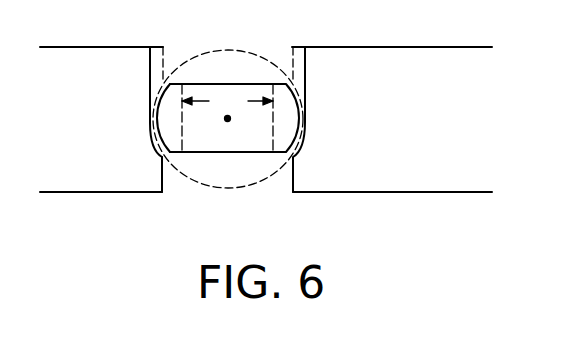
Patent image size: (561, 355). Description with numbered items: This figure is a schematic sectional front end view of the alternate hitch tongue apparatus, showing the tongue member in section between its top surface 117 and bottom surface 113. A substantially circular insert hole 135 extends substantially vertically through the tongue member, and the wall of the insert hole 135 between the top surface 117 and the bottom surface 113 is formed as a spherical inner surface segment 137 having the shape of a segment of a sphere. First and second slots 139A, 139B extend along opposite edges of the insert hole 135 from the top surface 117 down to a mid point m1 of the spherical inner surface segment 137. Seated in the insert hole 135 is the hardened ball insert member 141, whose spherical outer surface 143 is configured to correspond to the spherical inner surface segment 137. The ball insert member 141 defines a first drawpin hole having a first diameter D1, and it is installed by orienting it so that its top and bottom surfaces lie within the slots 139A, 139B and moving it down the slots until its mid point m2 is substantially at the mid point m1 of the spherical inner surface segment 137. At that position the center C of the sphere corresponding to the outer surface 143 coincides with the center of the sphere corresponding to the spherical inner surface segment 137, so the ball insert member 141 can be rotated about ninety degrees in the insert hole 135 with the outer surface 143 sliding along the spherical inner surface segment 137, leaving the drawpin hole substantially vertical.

The top surface 117 is at (441, 47).
The bottom surface 113 is at (447, 192).
The second slot 139B is at (157, 47).
The first slot 139A is at (303, 47).
The spherical inner surface segment 137 is at (305, 137).
The ball insert member 141 is at (248, 84).
The spherical outer surface 143 is at (158, 124).
The insert hole 135 is at (178, 190).
The first diameter D1 is at (227, 118).
The mid point of the spherical inner surface segment m1 is at (152, 128).
The mid point of the ball insert member m2 is at (152, 128).
The center of the sphere C is at (228, 118).